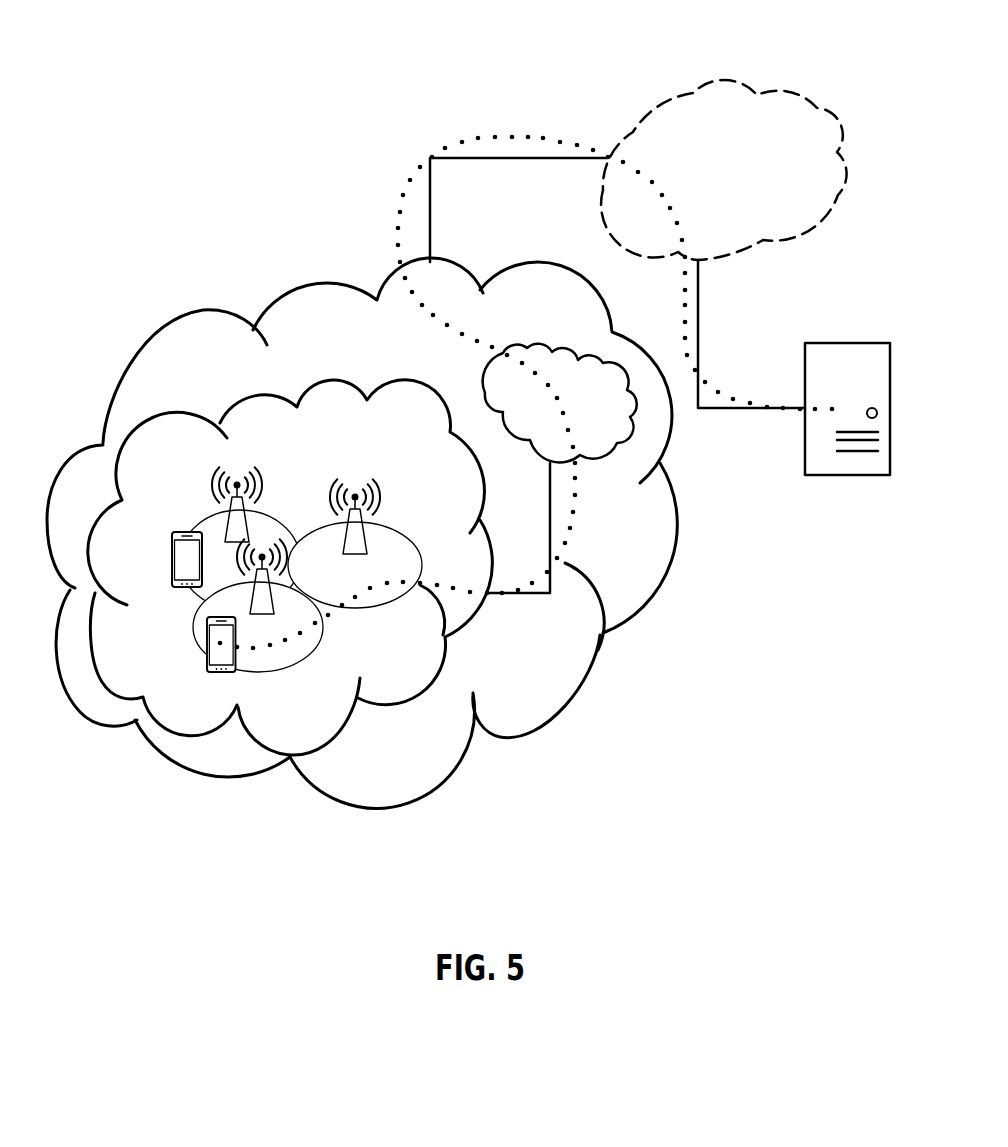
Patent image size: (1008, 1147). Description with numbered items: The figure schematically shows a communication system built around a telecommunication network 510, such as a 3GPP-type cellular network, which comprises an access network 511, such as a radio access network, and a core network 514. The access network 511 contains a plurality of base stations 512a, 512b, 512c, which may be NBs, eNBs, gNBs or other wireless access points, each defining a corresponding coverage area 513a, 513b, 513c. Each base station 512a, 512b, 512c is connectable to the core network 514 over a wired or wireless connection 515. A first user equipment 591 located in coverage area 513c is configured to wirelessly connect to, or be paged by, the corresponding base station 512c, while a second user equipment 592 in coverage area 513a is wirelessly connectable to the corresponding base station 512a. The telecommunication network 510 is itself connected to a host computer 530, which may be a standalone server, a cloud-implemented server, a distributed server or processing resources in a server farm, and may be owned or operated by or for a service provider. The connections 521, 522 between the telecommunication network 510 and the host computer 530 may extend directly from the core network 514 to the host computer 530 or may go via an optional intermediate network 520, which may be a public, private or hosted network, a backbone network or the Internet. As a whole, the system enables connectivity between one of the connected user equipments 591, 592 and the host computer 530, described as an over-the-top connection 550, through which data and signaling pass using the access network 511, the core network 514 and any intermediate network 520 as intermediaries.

The telecommunication network 510 is at (386, 334).
The access network 511 is at (335, 442).
The base station 512a is at (268, 612).
The base station 512b is at (373, 497).
The base station 512c is at (214, 488).
The coverage area 513a is at (323, 627).
The coverage area 513b is at (420, 567).
The coverage area 513c is at (190, 527).
The core network 514 is at (633, 417).
The connection 515 is at (552, 507).
The intermediate network 520 is at (748, 181).
The connection 521 is at (510, 157).
The connection 522 is at (758, 410).
The host computer 530 is at (847, 427).
The OTT connection 550 is at (407, 181).
The first user equipment 591 is at (173, 582).
The second user equipment 592 is at (202, 668).